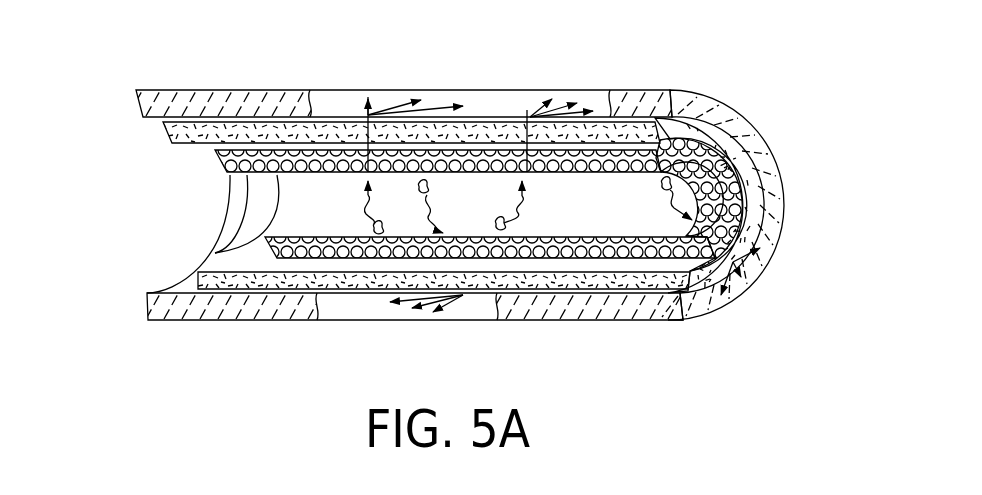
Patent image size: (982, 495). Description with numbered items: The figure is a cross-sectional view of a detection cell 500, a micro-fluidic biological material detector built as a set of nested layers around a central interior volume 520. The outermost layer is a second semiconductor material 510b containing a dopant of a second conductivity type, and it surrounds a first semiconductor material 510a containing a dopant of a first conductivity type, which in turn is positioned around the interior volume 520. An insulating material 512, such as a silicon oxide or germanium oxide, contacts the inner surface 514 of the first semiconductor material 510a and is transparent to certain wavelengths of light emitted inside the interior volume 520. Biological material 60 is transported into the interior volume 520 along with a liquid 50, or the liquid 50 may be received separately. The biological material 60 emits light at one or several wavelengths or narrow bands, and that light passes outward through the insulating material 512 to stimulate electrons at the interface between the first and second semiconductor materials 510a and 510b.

The detection cell 500 is at (744, 66).
The second semiconductor material 510b is at (143, 105).
The first semiconductor material 510a is at (167, 140).
The inner surface 514 is at (176, 141).
The insulating material 512 is at (215, 253).
The biological material 60 is at (437, 188).
The liquid 50 is at (583, 218).
The interior volume 520 is at (699, 193).